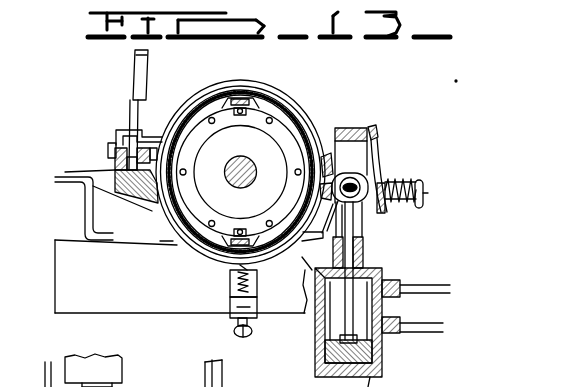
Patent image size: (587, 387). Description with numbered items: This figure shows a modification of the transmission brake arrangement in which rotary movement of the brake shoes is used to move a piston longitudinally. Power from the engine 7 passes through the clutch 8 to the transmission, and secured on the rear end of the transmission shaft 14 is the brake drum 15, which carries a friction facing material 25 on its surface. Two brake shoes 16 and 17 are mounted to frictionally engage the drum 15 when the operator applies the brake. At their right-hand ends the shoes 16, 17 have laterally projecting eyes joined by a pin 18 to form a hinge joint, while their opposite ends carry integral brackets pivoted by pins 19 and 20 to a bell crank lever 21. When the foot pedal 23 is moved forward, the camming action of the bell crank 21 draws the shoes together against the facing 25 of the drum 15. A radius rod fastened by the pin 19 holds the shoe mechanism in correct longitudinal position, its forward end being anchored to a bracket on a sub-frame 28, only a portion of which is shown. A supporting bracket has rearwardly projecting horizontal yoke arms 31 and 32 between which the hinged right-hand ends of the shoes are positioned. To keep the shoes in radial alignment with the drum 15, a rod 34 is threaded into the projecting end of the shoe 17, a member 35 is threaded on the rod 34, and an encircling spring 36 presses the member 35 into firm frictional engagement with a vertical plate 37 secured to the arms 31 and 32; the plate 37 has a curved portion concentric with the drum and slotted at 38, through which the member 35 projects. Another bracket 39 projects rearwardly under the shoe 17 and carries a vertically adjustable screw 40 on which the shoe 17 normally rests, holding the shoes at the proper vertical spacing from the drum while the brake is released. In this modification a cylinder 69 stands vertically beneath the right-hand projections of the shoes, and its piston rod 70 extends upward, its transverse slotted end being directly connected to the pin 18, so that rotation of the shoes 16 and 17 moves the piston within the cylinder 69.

The engine 7 is at (121, 364).
The clutch 8 is at (156, 377).
The transmission shaft 14 is at (225, 165).
The brake drum 15 is at (281, 118).
The brake shoe 16 is at (243, 82).
The brake shoe 17 is at (182, 247).
The pin 18 is at (356, 185).
The pin 19 is at (110, 148).
The pin 20 is at (115, 162).
The bell crank lever 21 is at (129, 112).
The manually operated lever 23 is at (44, 378).
The friction facing material 25 is at (185, 115).
The sub-frame 28 is at (73, 236).
The yoke arm 31 is at (355, 128).
The yoke arm 32 is at (362, 212).
The rod 34 is at (428, 195).
The member 35 is at (384, 200).
The spring 36 is at (406, 183).
The vertical plate 37 is at (377, 139).
The slot 38 is at (382, 158).
The bracket 39 is at (231, 305).
The adjustable screw 40 is at (235, 332).
The cylinder 69 is at (325, 320).
The piston rod 70 is at (327, 333).